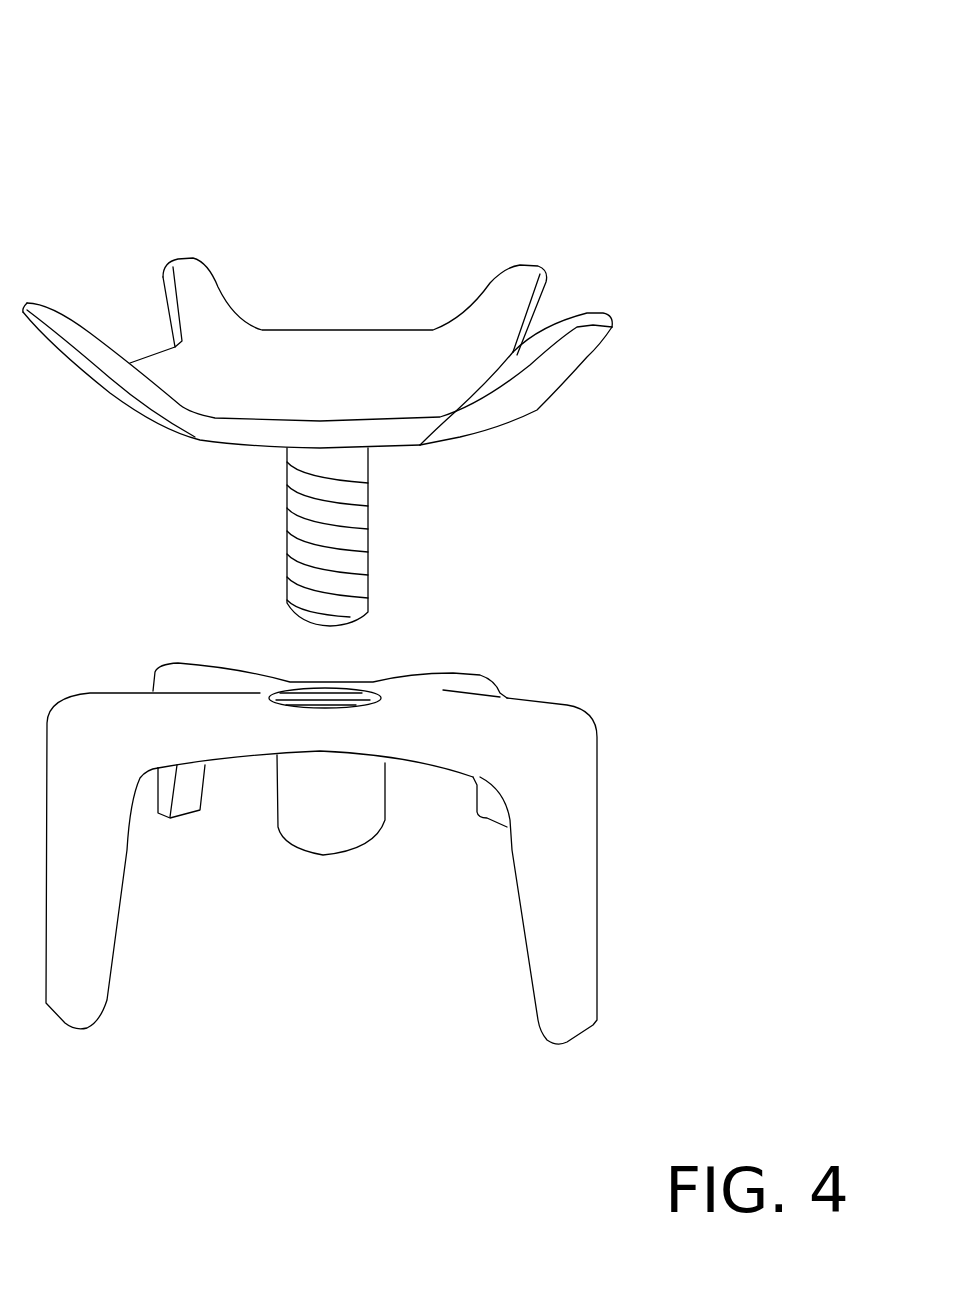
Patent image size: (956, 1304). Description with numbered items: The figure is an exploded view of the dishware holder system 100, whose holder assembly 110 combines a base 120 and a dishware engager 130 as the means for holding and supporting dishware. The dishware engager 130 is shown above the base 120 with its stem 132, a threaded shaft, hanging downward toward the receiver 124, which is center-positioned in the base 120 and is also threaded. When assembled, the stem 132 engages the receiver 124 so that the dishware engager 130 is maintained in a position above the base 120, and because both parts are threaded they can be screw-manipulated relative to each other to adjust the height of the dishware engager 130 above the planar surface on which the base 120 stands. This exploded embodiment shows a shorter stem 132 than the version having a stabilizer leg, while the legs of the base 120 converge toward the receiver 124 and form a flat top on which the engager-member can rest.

The dishware holder system 100 is at (590, 117).
The holder assembly 110 is at (653, 472).
The dishware engager 130 is at (594, 293).
The stem 132 is at (370, 497).
The base 120 is at (636, 748).
The receiver 124 is at (367, 690).